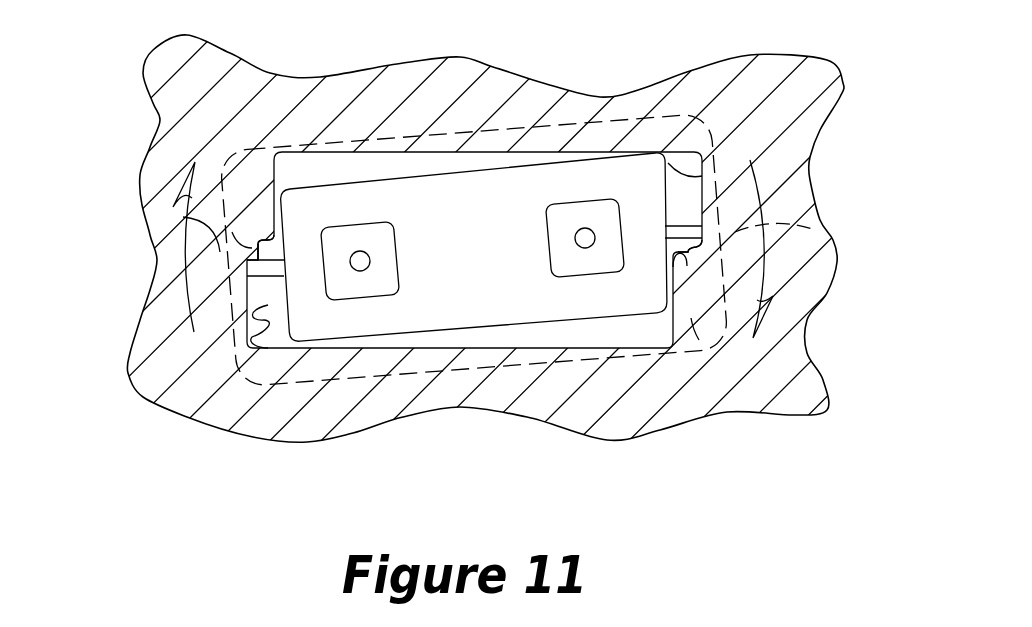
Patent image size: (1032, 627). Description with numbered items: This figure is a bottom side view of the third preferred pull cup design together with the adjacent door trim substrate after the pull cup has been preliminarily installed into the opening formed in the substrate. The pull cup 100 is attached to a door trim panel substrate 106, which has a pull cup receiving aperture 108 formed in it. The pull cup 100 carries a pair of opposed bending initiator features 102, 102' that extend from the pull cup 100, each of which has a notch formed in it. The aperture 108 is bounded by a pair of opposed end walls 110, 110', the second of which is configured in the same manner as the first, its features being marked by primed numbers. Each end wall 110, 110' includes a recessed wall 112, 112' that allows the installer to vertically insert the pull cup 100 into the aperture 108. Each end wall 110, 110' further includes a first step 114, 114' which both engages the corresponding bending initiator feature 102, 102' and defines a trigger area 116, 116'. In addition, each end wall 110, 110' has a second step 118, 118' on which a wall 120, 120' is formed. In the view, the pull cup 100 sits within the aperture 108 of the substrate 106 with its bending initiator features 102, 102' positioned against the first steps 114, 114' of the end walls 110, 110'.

The pull cup 100 is at (494, 263).
The bending initiator feature 102 is at (312, 296).
The bending initiator feature 102' is at (641, 205).
The door trim panel substrate 106 is at (442, 400).
The pull cup receiving aperture 108 is at (537, 357).
The end wall 110 is at (167, 320).
The end wall 110' is at (676, 97).
The recessed wall 112 is at (399, 282).
The recessed wall 112' is at (795, 208).
The first step 114 is at (181, 257).
The first step 114' is at (790, 269).
The trigger area 116 is at (131, 247).
The trigger area 116' is at (826, 249).
The second step 118 is at (241, 135).
The second step 118' is at (684, 401).
The wall 120 is at (302, 223).
The wall 120' is at (642, 279).